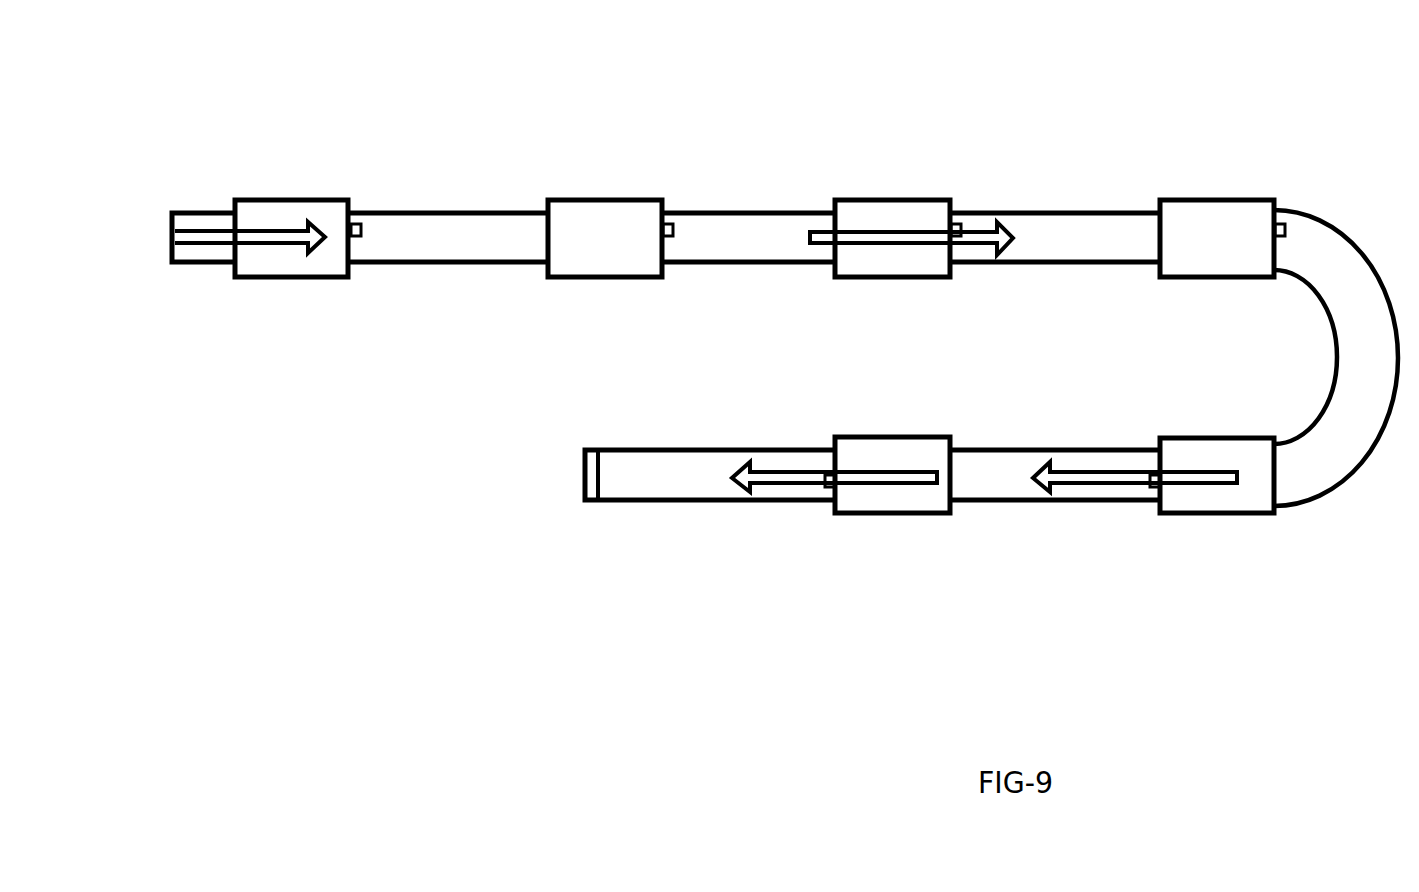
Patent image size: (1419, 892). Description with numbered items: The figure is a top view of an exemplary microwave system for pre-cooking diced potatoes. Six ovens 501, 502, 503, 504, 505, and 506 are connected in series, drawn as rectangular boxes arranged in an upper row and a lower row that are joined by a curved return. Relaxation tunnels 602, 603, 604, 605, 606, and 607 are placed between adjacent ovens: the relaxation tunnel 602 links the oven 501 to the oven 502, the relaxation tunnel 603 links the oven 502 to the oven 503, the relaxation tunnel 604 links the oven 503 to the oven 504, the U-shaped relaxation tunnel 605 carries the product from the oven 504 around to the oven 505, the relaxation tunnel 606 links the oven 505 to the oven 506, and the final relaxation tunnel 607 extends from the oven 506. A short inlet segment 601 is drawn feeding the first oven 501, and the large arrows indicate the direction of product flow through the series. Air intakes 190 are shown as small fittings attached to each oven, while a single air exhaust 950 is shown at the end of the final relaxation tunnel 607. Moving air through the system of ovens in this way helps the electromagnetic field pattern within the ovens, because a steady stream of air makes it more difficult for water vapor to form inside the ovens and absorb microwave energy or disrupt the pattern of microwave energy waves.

The air intake 190 is at (353, 220).
The oven 501 is at (292, 198).
The oven 502 is at (605, 198).
The oven 503 is at (917, 198).
The oven 504 is at (1220, 198).
The oven 505 is at (1215, 515).
The oven 506 is at (887, 515).
The inlet conduit segment 601 is at (205, 212).
The relaxation tunnel 602 is at (448, 212).
The relaxation tunnel 603 is at (750, 211).
The relaxation tunnel 604 is at (1055, 210).
The relaxation tunnel 605 is at (1348, 272).
The relaxation tunnel 606 is at (1052, 505).
The relaxation tunnel 607 is at (715, 505).
The air exhaust 950 is at (585, 505).